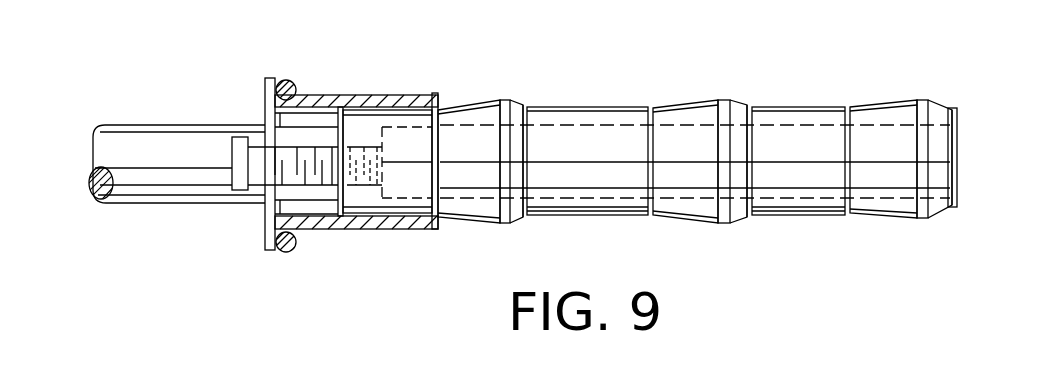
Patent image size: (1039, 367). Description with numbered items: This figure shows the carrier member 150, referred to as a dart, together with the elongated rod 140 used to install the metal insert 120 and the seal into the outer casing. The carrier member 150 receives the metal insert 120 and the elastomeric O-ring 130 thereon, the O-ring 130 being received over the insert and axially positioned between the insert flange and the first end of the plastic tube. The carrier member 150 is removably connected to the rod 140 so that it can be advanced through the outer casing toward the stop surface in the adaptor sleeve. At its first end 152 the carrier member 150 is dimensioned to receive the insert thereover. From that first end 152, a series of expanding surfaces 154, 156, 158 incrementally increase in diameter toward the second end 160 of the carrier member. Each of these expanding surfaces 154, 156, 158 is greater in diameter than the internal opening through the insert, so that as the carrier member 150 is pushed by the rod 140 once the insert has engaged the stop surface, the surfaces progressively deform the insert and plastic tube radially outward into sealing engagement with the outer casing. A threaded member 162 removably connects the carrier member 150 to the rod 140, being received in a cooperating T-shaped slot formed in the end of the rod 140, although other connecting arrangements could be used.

The metal insert 120 is at (400, 92).
The elastomeric O-ring 130 is at (292, 85).
The elongated rod 140 is at (153, 182).
The carrier member 150 is at (675, 117).
The first end 152 is at (360, 203).
The expanding surface 154 is at (510, 98).
The expanding surface 156 is at (722, 220).
The expanding surface 158 is at (920, 100).
The second end 160 is at (955, 207).
The threaded member 162 is at (237, 150).